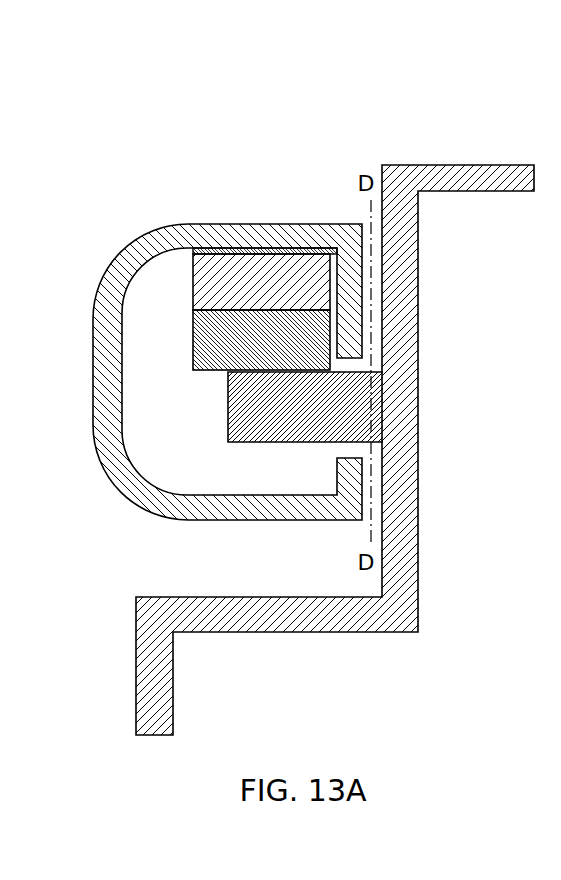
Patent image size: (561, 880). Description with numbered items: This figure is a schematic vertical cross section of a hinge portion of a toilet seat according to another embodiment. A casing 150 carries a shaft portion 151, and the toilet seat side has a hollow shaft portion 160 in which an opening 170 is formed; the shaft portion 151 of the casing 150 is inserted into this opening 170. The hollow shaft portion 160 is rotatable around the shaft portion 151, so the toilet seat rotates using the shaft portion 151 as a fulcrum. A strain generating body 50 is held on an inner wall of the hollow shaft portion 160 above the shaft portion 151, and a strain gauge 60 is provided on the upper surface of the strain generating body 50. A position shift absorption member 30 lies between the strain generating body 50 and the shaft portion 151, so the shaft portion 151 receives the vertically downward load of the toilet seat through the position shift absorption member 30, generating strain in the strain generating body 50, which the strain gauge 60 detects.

The hollow shaft portion 160 is at (141, 241).
The casing 150 is at (479, 164).
The shaft portion 151 is at (313, 407).
The strain gauge 60 is at (311, 249).
The strain generating body 50 is at (262, 290).
The position shift absorption member 30 is at (212, 343).
The opening 170 is at (347, 448).